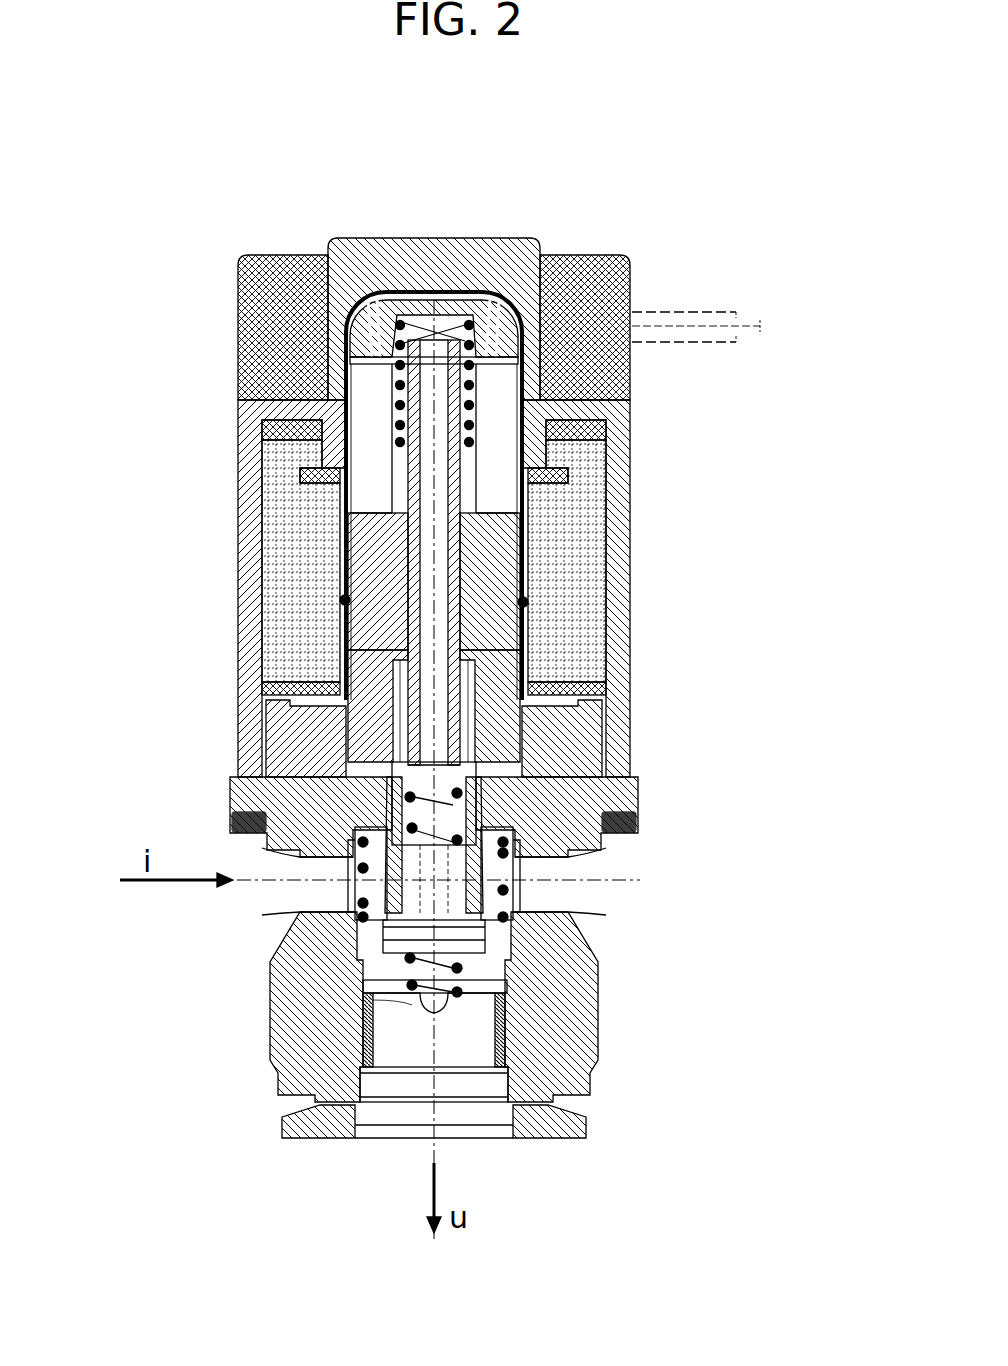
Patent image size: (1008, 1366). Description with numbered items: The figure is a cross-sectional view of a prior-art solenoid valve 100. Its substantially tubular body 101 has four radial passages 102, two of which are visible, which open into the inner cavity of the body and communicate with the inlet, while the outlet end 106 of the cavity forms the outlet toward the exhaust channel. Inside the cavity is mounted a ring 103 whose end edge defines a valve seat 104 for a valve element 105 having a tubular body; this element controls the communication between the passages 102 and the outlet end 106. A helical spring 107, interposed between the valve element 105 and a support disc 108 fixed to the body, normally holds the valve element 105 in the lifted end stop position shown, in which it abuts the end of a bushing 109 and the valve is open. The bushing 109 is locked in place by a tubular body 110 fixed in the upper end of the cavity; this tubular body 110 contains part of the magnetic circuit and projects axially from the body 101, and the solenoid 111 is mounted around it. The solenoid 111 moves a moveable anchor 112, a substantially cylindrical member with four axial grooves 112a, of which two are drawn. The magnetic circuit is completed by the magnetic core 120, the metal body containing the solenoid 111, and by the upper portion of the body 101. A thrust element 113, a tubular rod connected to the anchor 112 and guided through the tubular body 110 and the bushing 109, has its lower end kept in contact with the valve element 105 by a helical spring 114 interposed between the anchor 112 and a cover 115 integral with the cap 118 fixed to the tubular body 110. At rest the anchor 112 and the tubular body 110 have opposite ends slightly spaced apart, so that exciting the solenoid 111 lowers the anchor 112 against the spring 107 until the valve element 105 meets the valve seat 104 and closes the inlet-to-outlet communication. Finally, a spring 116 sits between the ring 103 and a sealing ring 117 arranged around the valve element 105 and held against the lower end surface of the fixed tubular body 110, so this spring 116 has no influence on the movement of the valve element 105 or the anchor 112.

The solenoid valve 100 is at (720, 298).
The tubular body 101 is at (252, 1045).
The radial passages 102 is at (315, 895).
The ring 103 is at (510, 936).
The valve seat 104 is at (505, 869).
The valve element 105 is at (518, 872).
The outlet end 106 is at (477, 1083).
The helical spring 107 is at (413, 960).
The support disc 108 is at (512, 1033).
The bushing 109 is at (393, 687).
The tubular body 110 is at (495, 590).
The solenoid 111 is at (296, 498).
The moveable anchor 112 is at (497, 430).
The axial grooves 112a is at (562, 483).
The thrust element 113 is at (342, 598).
The helical spring 114 is at (388, 363).
The cover 115 is at (472, 318).
The spring 116 is at (352, 862).
The sealing ring 117 is at (383, 822).
The cap 118 is at (402, 287).
The magnetic core 120 is at (640, 460).